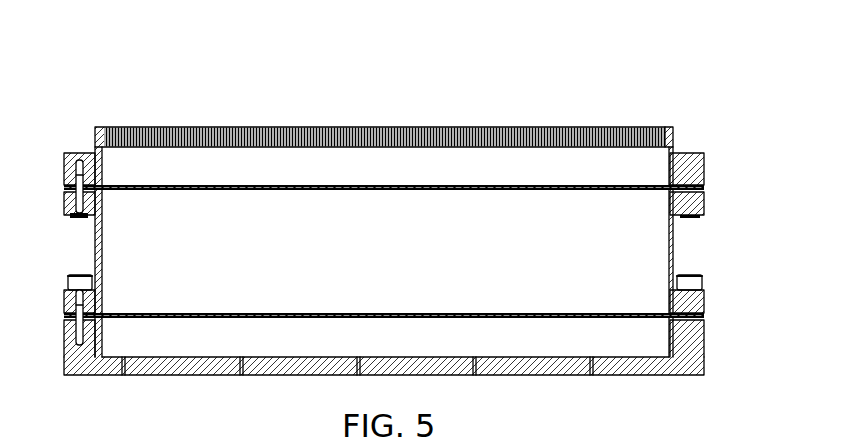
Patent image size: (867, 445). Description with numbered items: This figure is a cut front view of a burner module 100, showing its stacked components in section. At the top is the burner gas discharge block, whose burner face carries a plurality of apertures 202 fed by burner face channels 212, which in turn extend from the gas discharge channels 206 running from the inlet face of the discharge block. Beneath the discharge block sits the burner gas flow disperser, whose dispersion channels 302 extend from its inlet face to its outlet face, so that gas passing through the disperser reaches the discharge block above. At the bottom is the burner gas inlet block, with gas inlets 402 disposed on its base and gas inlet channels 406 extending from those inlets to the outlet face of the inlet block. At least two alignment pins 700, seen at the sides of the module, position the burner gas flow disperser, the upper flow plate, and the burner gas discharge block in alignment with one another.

The burner module 100 is at (382, 230).
The apertures 202 is at (384, 117).
The burner face channels 212 is at (552, 129).
The gas discharge channels 206 is at (658, 156).
The dispersion channels 302 is at (652, 253).
The gas inlets 402 is at (588, 376).
The gas inlet channels 406 is at (650, 343).
The alignment pins 700 is at (78, 199).